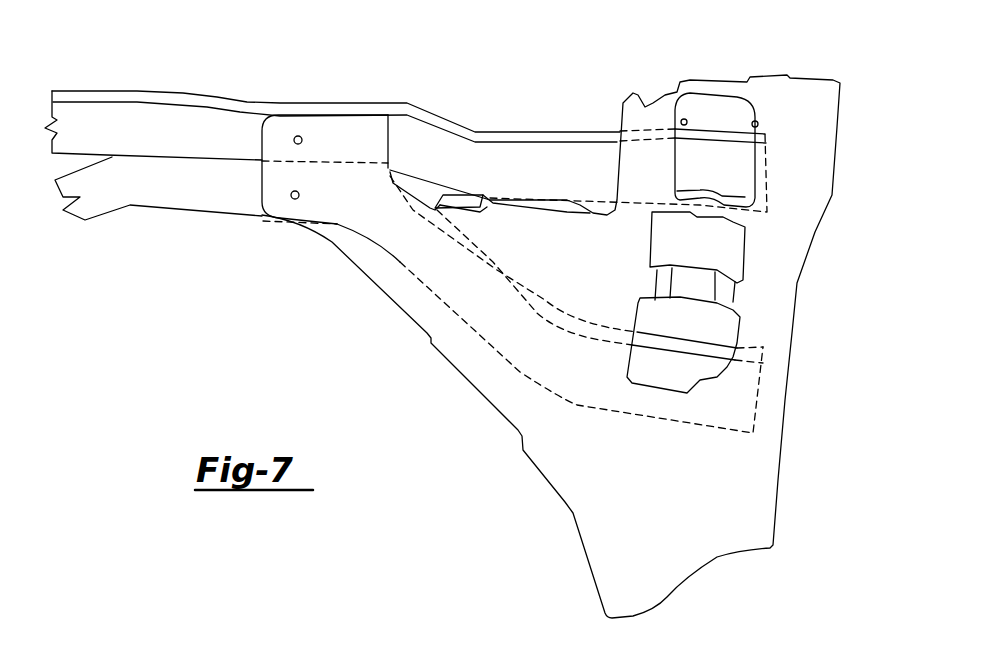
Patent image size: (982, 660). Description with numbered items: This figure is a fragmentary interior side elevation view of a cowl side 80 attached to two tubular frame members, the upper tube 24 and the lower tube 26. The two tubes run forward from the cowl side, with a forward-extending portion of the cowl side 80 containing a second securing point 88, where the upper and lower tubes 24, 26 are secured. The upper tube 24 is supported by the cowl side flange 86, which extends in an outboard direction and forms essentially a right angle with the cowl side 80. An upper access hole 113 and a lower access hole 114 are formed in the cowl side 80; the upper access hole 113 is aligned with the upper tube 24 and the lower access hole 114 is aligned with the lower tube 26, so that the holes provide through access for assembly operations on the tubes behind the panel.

The upper tube 24 is at (133, 117).
The lower tube 26 is at (163, 183).
The bracket 80 is at (800, 242).
The cowl side flange 86 is at (579, 271).
The second securing point 88 is at (299, 194).
The upper access hole 113 is at (819, 136).
The lower access hole 114 is at (781, 320).